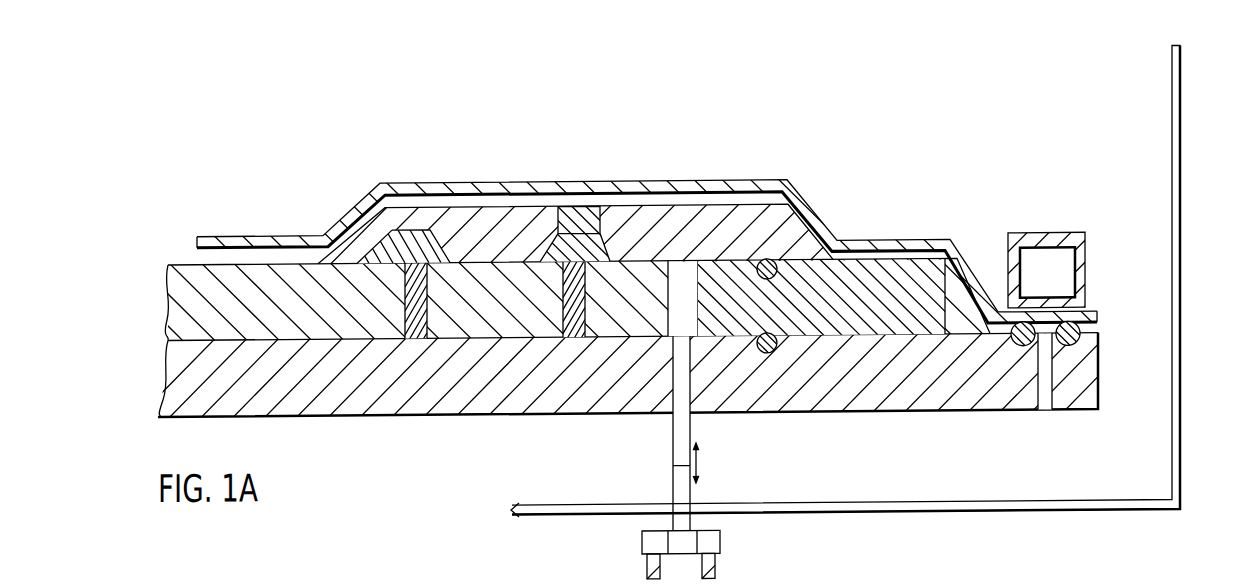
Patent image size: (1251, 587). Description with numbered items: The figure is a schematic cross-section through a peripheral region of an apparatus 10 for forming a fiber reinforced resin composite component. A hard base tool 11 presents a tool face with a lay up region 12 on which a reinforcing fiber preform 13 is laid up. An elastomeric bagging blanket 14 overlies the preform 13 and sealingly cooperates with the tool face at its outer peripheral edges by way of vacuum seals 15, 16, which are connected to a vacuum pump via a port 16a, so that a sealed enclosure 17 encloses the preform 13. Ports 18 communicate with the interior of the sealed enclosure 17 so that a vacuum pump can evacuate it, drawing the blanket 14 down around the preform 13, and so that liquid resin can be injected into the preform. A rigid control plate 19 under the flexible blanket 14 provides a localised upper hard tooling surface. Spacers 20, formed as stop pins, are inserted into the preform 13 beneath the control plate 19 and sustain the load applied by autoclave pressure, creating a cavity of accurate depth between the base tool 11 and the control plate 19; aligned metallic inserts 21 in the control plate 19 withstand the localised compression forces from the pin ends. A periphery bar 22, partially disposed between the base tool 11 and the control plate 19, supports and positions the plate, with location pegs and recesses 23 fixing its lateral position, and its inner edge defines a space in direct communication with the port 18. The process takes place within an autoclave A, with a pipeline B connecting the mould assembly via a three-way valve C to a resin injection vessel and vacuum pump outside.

The apparatus 10 is at (927, 196).
The hard base tool 11 is at (608, 411).
The lay up region 12 is at (316, 345).
The preform 13 is at (188, 272).
The elastomeric bagging blanket 14 is at (342, 222).
The vacuum seal 15 is at (1085, 280).
The vacuum seal 16 is at (1080, 336).
The port 16a is at (1047, 404).
The sealed enclosure 17 is at (683, 319).
The port 18 is at (675, 464).
The control plate 19 is at (707, 228).
The spacer 20 is at (418, 346).
The metallic insert 21 is at (575, 220).
The periphery bar 22 is at (833, 322).
The location pegs and recesses 23 is at (770, 340).
The autoclave A is at (1181, 259).
The pipeline B is at (692, 527).
The three-way valve C is at (640, 547).